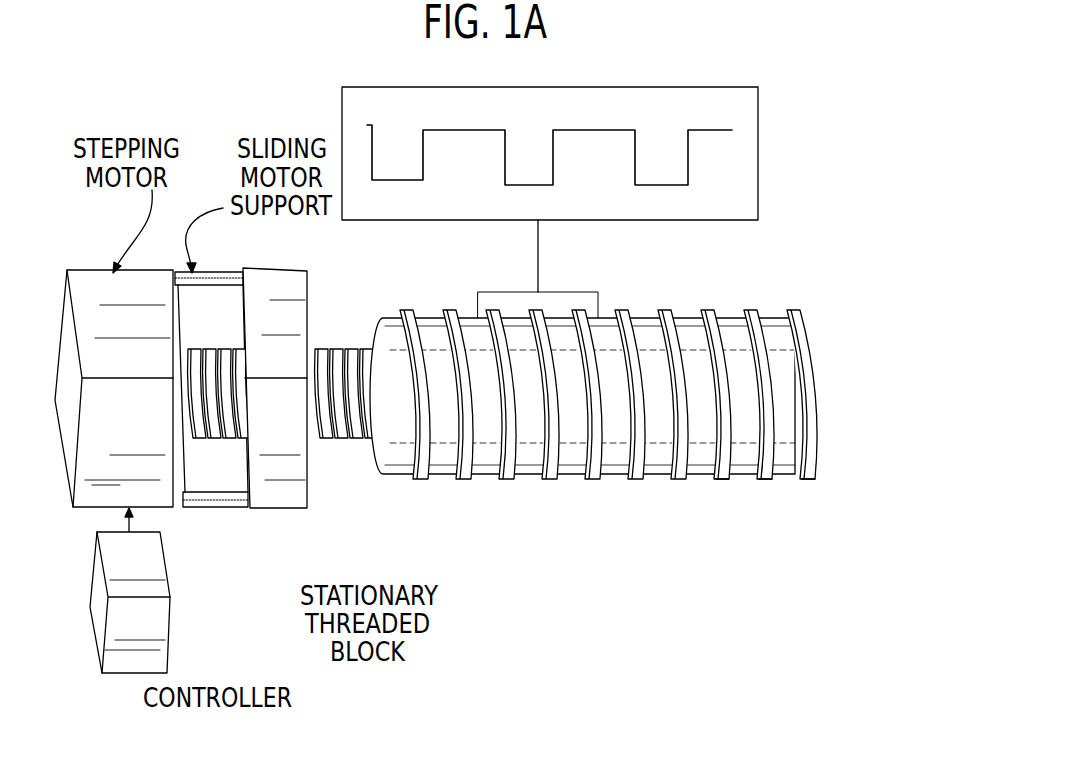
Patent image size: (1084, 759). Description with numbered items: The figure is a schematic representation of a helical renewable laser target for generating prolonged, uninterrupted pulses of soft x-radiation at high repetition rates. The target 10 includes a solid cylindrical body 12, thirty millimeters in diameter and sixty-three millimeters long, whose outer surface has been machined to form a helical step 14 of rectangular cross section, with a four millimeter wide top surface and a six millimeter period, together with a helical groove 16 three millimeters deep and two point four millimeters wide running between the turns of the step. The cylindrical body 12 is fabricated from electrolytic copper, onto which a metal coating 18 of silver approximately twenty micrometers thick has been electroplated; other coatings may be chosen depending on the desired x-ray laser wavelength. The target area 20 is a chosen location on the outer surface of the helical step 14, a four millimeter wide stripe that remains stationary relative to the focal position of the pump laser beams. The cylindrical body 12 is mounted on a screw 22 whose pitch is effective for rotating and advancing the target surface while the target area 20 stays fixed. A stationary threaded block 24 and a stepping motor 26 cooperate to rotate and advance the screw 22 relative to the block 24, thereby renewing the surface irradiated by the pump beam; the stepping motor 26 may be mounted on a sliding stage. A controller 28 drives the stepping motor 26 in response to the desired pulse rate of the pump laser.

The target 10 is at (640, 406).
The solid cylindrical body 12 is at (582, 404).
The helical step 14 is at (802, 479).
The helical groove 16 is at (613, 474).
The metal coating 18 is at (802, 479).
The target area 20 is at (820, 403).
The screw 22 is at (345, 348).
The stationary threaded block 24 is at (297, 514).
The stepping motor 26 is at (141, 436).
The controller 28 is at (178, 617).